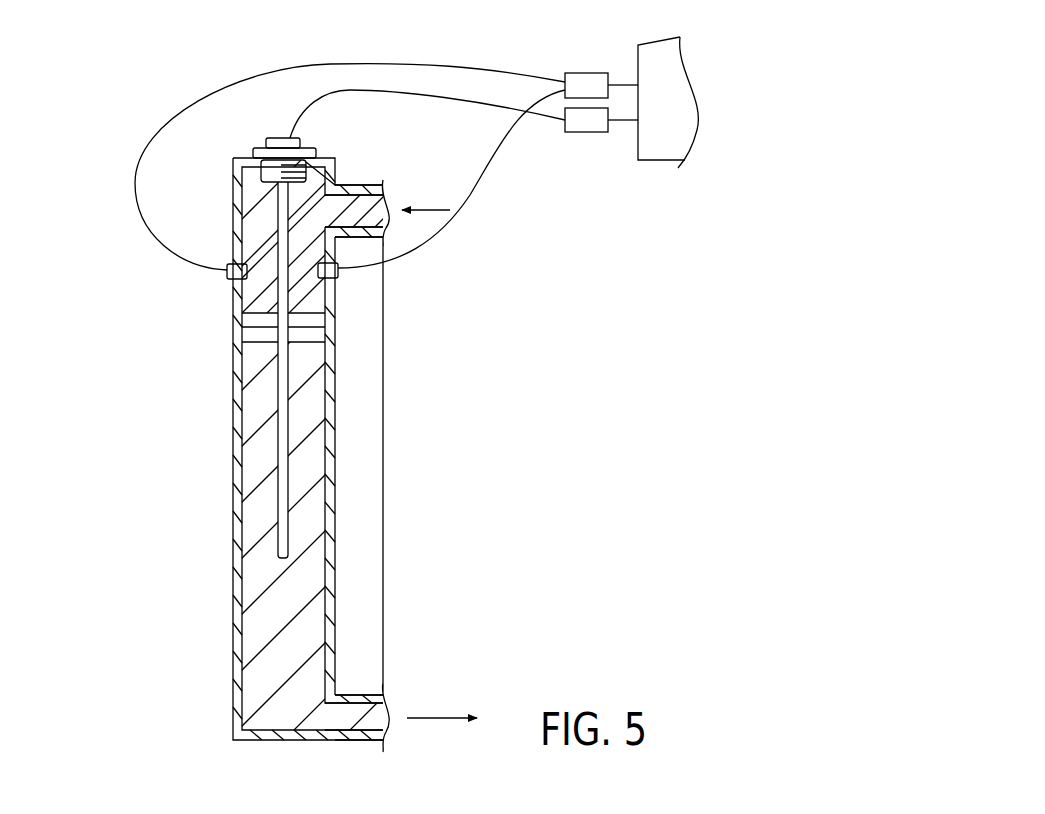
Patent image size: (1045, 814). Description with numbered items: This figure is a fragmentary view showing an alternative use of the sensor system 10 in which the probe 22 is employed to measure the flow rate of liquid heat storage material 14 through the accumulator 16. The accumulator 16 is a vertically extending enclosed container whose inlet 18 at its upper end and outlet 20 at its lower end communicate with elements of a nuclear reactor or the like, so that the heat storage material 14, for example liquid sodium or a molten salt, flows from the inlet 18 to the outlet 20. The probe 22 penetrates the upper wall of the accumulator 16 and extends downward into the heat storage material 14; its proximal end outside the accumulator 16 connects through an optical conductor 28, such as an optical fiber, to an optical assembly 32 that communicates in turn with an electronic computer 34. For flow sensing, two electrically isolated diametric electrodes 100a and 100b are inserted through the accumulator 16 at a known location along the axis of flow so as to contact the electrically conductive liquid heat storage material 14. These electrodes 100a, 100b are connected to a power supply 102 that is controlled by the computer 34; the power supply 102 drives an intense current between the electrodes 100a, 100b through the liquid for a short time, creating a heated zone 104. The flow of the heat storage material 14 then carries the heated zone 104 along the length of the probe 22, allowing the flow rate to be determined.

The sensor system 10 is at (160, 82).
The heat storage material 14 is at (312, 460).
The accumulator 16 is at (338, 637).
The inlet 18 is at (355, 185).
The outlet 20 is at (375, 742).
The probe 22 is at (278, 428).
The optical conductor 28 is at (414, 92).
The optical assembly 32 is at (586, 132).
The electronic computer 34 is at (662, 45).
The electrode 100a is at (228, 278).
The electrode 100b is at (333, 280).
The power supply 102 is at (587, 73).
The heated zone 104 is at (250, 348).